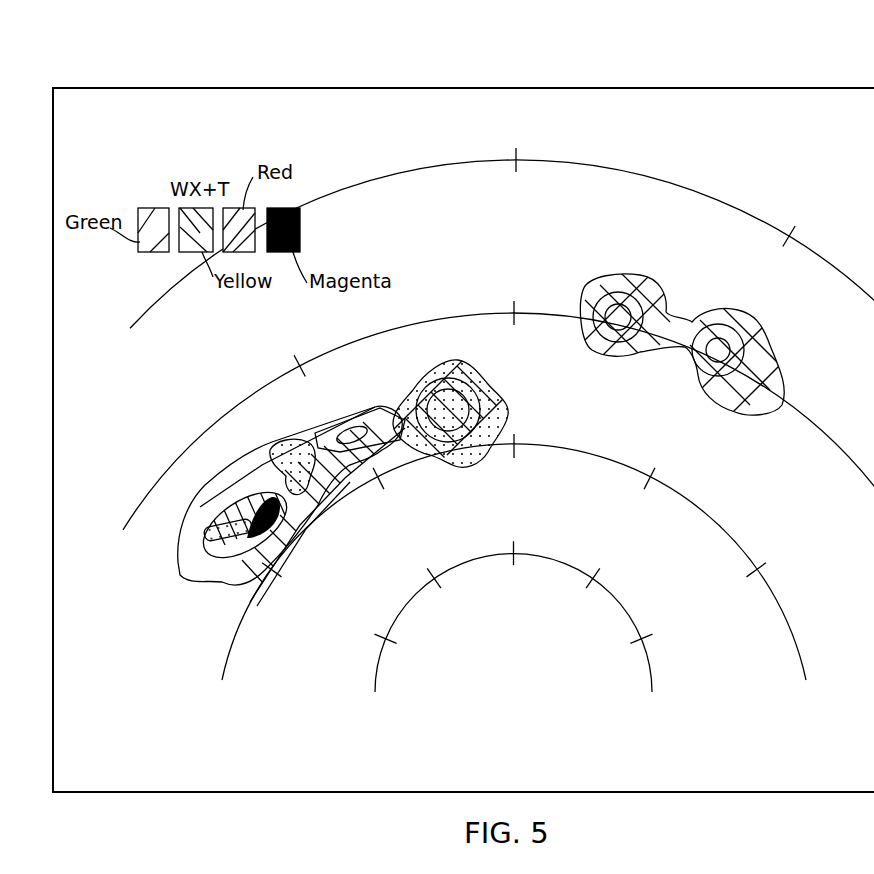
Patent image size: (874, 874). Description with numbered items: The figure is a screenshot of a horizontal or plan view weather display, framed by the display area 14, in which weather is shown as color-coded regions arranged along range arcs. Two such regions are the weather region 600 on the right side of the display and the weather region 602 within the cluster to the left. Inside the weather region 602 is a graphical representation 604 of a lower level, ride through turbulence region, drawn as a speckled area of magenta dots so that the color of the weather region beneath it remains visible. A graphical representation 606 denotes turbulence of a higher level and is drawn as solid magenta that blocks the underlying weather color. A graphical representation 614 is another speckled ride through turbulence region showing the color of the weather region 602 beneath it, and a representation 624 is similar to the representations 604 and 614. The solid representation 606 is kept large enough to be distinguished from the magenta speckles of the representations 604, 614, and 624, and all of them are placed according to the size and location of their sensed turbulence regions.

The display screen 14 is at (558, 74).
The weather region 600 is at (682, 317).
The weather region 602 is at (432, 367).
The graphical representation of lower level turbulence region 604 is at (497, 390).
The graphical representation of higher level turbulence 606 is at (290, 533).
The graphical representation of ride through turbulence region 614 is at (213, 540).
The representation 624 is at (292, 445).